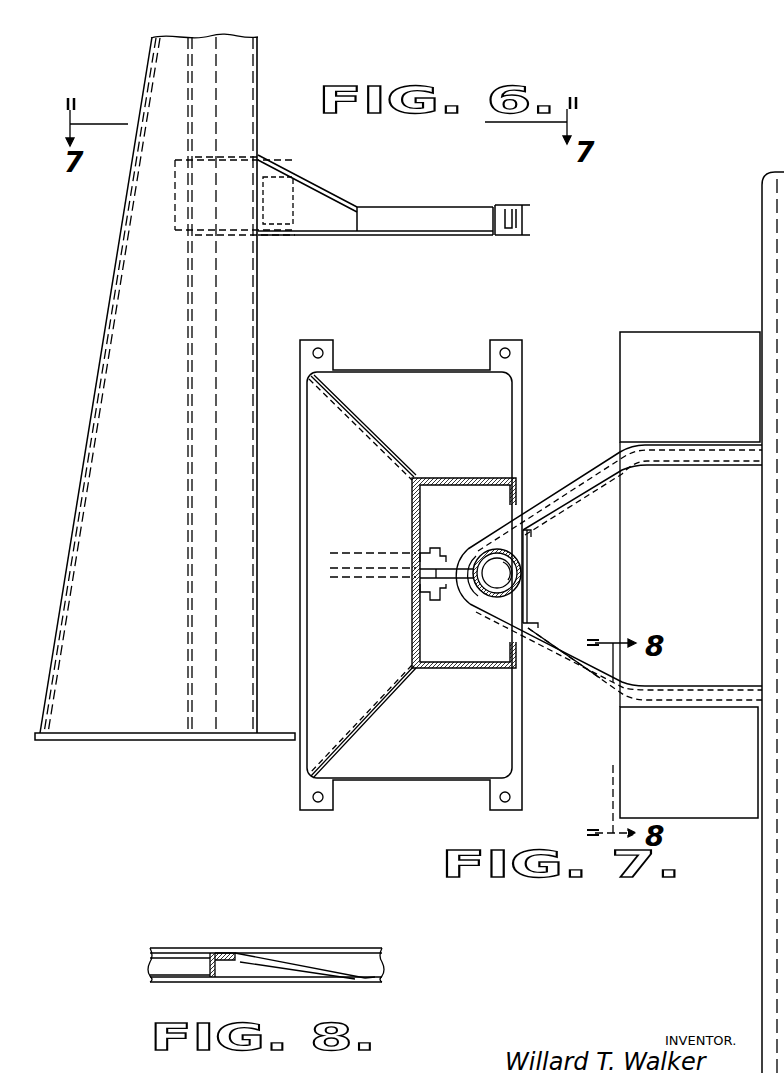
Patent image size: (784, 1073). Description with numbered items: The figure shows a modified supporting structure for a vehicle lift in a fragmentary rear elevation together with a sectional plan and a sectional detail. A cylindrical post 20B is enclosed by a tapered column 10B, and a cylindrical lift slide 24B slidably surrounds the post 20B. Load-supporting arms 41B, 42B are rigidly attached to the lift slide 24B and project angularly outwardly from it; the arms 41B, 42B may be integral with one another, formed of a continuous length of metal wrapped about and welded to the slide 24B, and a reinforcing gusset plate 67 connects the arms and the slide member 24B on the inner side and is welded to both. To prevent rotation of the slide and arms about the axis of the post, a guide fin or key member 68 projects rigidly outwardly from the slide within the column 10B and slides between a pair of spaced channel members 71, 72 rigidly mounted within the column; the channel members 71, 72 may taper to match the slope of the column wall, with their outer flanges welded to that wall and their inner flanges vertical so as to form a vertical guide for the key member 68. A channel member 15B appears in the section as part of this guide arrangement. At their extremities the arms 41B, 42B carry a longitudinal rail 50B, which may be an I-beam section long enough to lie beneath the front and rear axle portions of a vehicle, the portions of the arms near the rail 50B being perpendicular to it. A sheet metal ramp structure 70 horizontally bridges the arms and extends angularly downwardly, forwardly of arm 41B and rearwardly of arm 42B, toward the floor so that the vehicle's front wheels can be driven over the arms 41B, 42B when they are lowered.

In FIG. 6, the column 10B is at (126, 218).
In FIG. 7, the column 10B is at (460, 383).
In FIG. 7, the channel member 15B is at (515, 640).
In FIG. 6, the cylindrical post 20B is at (258, 286).
In FIG. 7, the cylindrical post 20B is at (522, 577).
In FIG. 6, the lift slide 24B is at (240, 137).
In FIG. 7, the lift slide 24B is at (528, 552).
In FIG. 7, the load-supporting arm 41B is at (590, 482).
In FIG. 6, the load-supporting arm 42B is at (406, 216).
In FIG. 7, the load-supporting arm 42B is at (580, 668).
In FIG. 8, the load-supporting arm 42B is at (215, 965).
In FIG. 6, the longitudinal rail 50B is at (520, 196).
In FIG. 7, the longitudinal rail 50B is at (762, 246).
In FIG. 8, the longitudinal rail 50B is at (368, 958).
In FIG. 7, the reinforcing gusset plate 67 is at (530, 612).
In FIG. 6, the guide fin or key member 68 is at (180, 178).
In FIG. 7, the guide fin or key member 68 is at (456, 570).
In FIG. 7, the ramp structure 70 is at (630, 360).
In FIG. 8, the ramp structure 70 is at (280, 960).
In FIG. 6, the channel member 71 is at (135, 312).
In FIG. 7, the channel member 71 is at (448, 562).
In FIG. 7, the channel member 72 is at (447, 588).